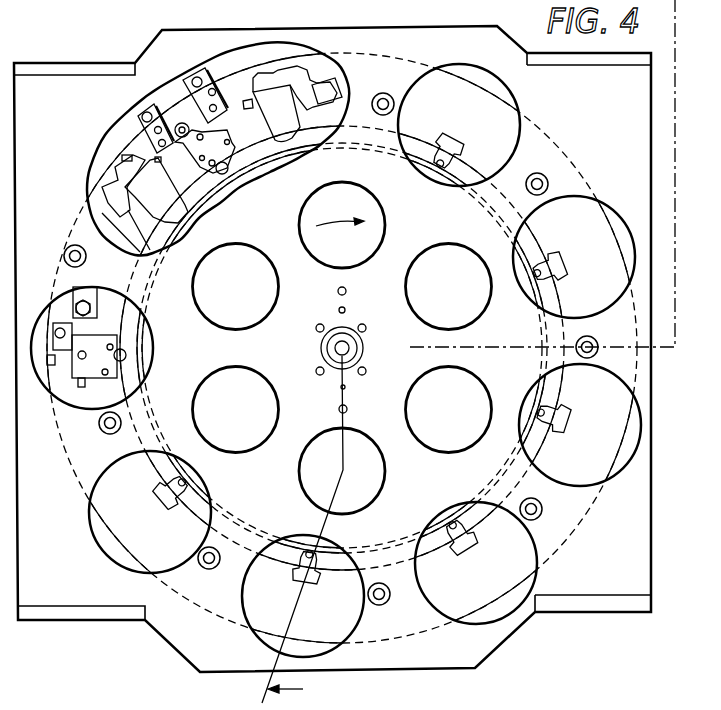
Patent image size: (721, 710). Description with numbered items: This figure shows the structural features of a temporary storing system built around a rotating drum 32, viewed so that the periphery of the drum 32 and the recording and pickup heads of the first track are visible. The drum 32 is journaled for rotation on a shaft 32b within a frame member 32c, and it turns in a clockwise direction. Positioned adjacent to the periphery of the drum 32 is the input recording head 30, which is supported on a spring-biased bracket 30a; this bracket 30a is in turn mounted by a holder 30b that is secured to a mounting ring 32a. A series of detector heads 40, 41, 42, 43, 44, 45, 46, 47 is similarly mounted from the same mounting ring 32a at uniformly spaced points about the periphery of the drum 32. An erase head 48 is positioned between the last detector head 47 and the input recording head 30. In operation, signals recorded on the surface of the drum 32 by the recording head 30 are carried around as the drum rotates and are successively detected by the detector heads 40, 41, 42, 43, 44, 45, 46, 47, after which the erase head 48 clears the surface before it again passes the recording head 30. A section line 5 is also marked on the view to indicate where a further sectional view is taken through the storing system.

The section line 5- 5 is at (481, 355).
The input recording head 30 is at (292, 140).
The spring-biased bracket 30a is at (287, 72).
The holder 30b is at (333, 84).
The drum 32 is at (520, 430).
The mounting ring 32a is at (471, 110).
The shaft 32b is at (350, 347).
The frame member 32c is at (621, 562).
The detector head 40 is at (448, 148).
The detector head 41 is at (556, 270).
The detector head 42 is at (563, 415).
The detector head 43 is at (460, 548).
The detector head 44 is at (311, 575).
The detector head 45 is at (160, 498).
The detector head 46 is at (118, 338).
The detector head 47 is at (183, 217).
The erase head 48 is at (232, 141).